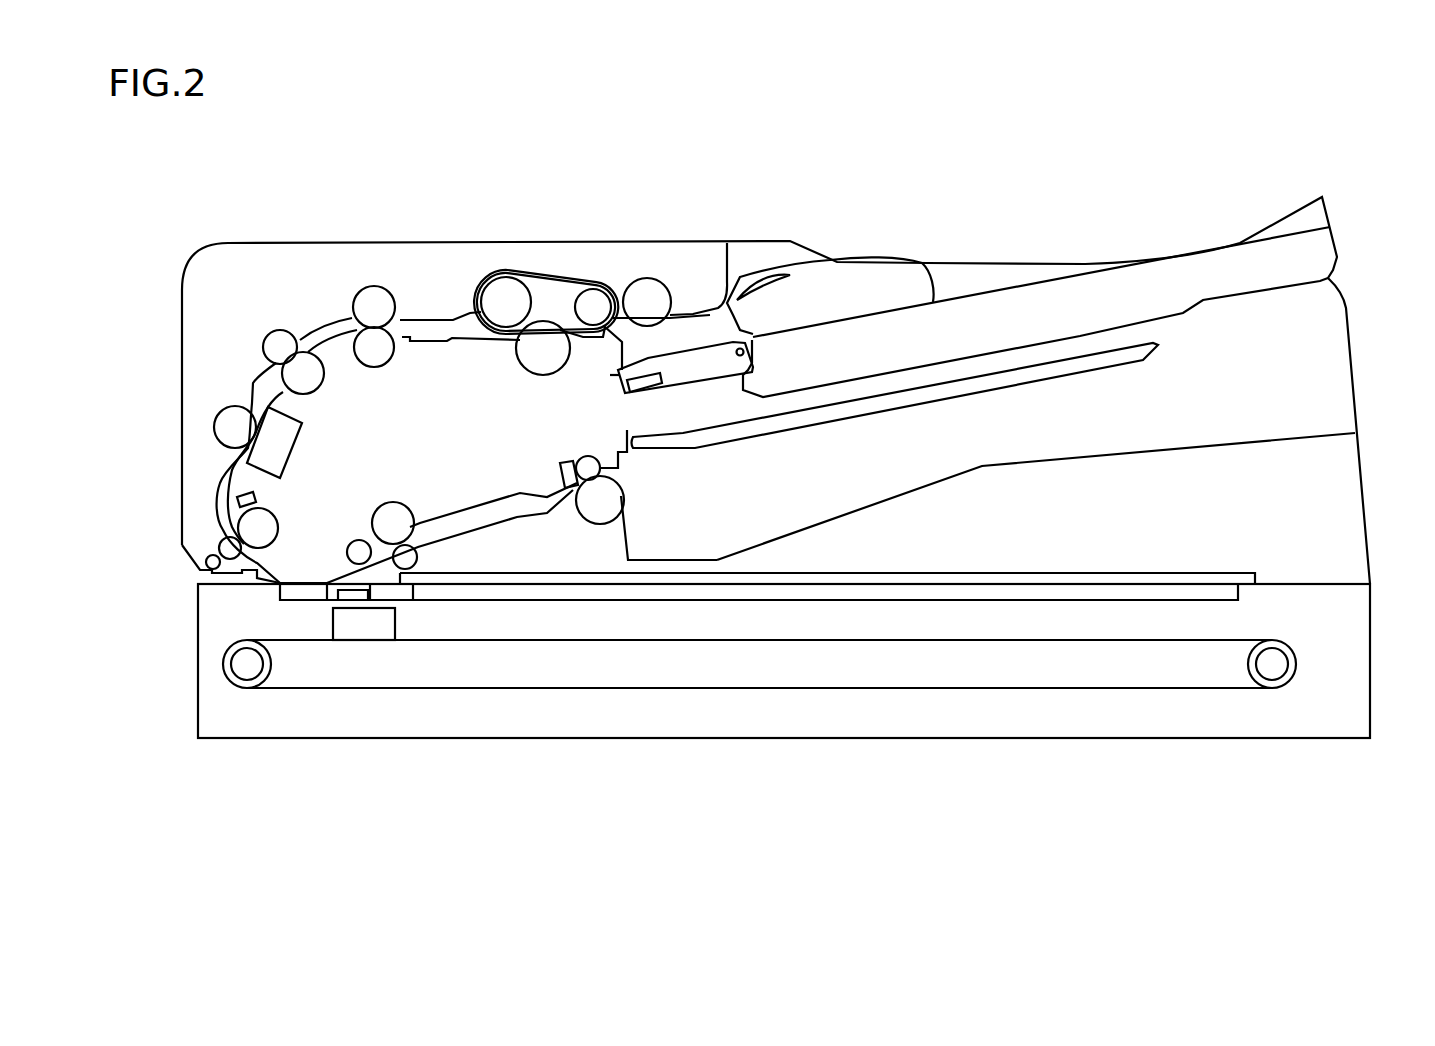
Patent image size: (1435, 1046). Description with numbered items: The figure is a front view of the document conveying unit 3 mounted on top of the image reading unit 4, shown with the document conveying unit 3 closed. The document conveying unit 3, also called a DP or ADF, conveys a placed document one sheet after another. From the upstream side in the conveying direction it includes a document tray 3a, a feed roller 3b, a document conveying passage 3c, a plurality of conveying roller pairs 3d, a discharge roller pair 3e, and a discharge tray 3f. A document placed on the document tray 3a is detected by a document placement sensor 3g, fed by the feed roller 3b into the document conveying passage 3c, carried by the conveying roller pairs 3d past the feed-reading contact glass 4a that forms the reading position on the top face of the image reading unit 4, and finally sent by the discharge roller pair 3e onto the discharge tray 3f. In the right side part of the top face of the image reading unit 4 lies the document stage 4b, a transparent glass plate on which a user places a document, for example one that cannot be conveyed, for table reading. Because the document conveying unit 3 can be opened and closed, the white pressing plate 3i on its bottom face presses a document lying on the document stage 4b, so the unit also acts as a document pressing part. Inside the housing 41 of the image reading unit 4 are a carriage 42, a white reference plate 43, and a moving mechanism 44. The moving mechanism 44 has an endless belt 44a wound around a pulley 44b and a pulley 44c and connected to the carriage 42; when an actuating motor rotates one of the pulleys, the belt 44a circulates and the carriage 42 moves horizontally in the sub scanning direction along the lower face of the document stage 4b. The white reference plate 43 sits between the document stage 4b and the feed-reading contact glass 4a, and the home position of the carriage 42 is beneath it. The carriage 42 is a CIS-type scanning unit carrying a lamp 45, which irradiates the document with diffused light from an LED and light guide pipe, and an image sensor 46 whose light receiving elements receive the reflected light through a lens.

The document conveying unit 3 is at (1383, 197).
The document tray 3a is at (963, 308).
The feed roller 3b is at (645, 298).
The document conveying passage 3c is at (400, 328).
The conveying roller pairs 3d is at (372, 295).
The discharge roller pair 3e is at (608, 497).
The discharge tray 3f is at (830, 519).
The document placement sensor 3g is at (647, 387).
The pressing plate 3i is at (893, 578).
The image reading unit 4 is at (782, 683).
The feed-reading contact glass 4a is at (290, 592).
The document stage 4b is at (1089, 595).
The housing 41 is at (787, 739).
The carriage 42 is at (362, 720).
The white reference plate 43 is at (355, 597).
The moving mechanism 44 is at (762, 747).
The belt 44a is at (1113, 689).
The pulley 44b is at (1272, 672).
The pulley 44c is at (245, 672).
The lamp 45 is at (364, 624).
The image sensor 46 is at (363, 628).